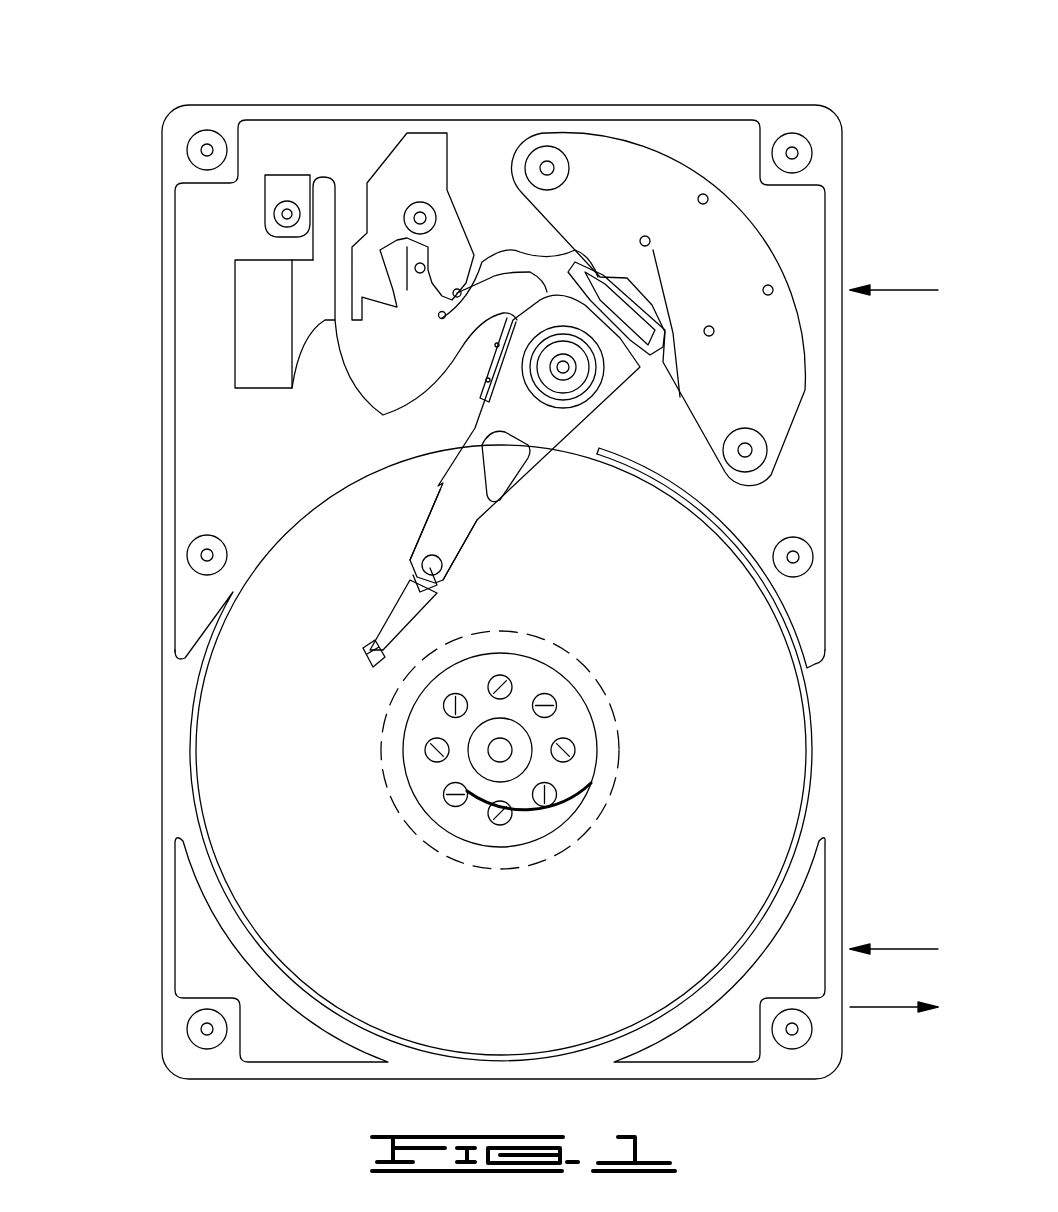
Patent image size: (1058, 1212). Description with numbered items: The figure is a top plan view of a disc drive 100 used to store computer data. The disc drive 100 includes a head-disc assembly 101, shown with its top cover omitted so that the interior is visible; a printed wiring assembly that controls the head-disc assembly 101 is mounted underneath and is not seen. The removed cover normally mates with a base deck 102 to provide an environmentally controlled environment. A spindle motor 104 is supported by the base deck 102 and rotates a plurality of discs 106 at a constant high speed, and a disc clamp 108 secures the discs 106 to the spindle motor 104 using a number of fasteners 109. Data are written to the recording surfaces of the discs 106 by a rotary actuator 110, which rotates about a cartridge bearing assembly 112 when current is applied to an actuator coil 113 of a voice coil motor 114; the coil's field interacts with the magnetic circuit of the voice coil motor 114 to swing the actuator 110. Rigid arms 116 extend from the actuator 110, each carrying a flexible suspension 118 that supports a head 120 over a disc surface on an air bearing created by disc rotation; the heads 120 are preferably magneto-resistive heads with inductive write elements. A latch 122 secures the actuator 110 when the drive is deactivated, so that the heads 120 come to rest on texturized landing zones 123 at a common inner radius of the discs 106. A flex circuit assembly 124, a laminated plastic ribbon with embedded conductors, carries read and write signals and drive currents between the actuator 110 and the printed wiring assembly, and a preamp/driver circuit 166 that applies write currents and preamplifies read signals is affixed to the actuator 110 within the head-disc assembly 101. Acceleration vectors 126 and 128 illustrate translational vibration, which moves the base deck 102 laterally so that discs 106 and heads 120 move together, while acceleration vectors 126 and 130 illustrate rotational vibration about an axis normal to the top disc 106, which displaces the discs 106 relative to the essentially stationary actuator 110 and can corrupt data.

The disc drive 100 is at (275, 87).
The head-disc assembly 101 is at (217, 250).
The base deck 102 is at (245, 455).
The spindle motor 104 is at (507, 775).
The discs 106 is at (735, 840).
The disc clamp 108 is at (427, 795).
The fasteners 109 is at (432, 740).
The rotary actuator 110 is at (538, 440).
The cartridge bearing assembly 112 is at (572, 382).
The actuator coil 113 is at (637, 335).
The voice coil motor 114 is at (597, 202).
The rigid arms 116 is at (440, 541).
The flexible suspension 118 is at (392, 620).
The heads 120 is at (365, 652).
The latch 122 is at (423, 150).
The texturized landing zones 123 is at (446, 857).
The flex circuit assembly 124 is at (360, 427).
The acceleration vector 126 is at (888, 290).
The acceleration vector 128 is at (888, 948).
The acceleration vector 130 is at (878, 1008).
The preamp/driver circuit 166 is at (486, 385).